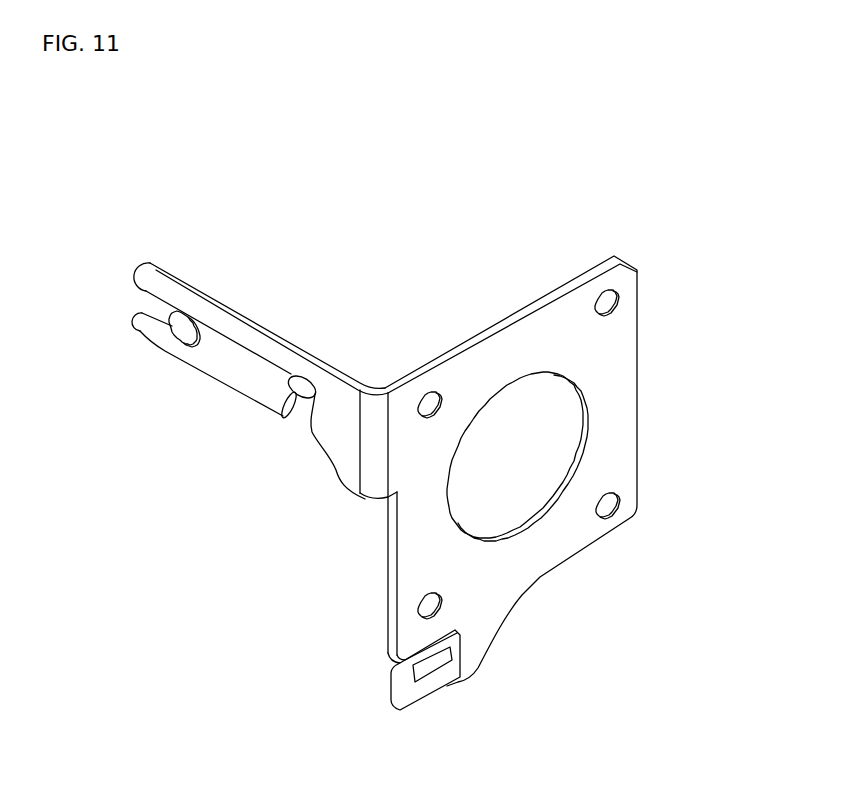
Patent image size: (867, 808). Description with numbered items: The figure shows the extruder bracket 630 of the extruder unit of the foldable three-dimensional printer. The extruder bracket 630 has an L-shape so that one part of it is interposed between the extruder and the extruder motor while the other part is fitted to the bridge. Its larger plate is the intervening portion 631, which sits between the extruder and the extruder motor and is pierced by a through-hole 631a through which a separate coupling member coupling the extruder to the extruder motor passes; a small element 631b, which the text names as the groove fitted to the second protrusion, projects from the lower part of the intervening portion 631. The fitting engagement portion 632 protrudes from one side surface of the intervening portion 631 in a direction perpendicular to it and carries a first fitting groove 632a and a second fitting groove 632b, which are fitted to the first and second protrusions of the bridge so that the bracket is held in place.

The extruder bracket 630 is at (97, 142).
The intervening portion 631 is at (612, 432).
The through-hole 631a is at (517, 453).
The second fitting groove 631b is at (443, 682).
The fitting engagement portion 632 is at (183, 471).
The first fitting groove 632a is at (186, 322).
The second fitting groove 632b is at (291, 405).